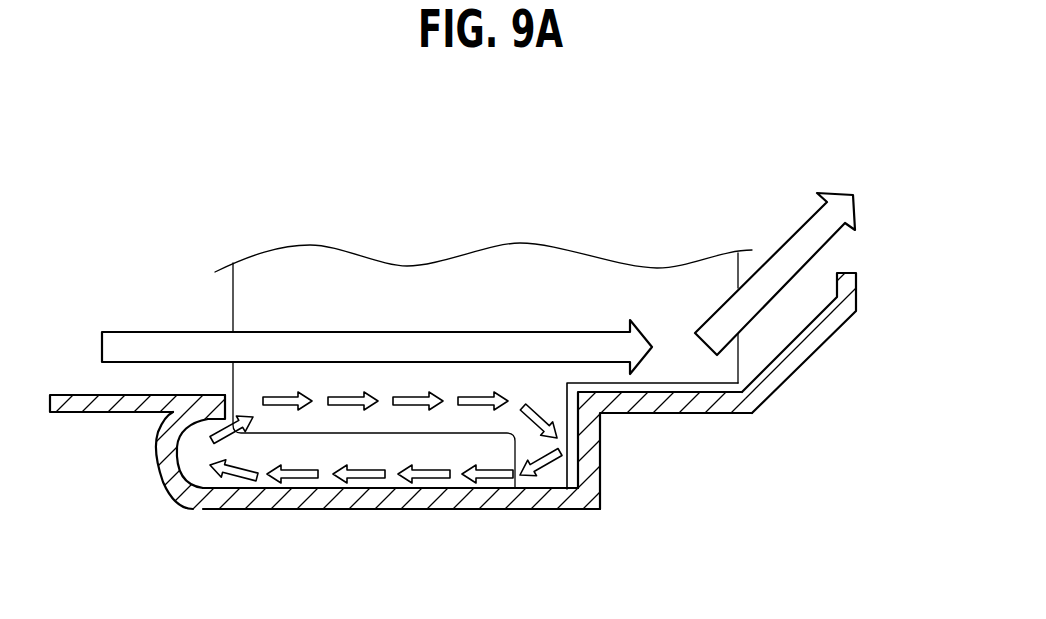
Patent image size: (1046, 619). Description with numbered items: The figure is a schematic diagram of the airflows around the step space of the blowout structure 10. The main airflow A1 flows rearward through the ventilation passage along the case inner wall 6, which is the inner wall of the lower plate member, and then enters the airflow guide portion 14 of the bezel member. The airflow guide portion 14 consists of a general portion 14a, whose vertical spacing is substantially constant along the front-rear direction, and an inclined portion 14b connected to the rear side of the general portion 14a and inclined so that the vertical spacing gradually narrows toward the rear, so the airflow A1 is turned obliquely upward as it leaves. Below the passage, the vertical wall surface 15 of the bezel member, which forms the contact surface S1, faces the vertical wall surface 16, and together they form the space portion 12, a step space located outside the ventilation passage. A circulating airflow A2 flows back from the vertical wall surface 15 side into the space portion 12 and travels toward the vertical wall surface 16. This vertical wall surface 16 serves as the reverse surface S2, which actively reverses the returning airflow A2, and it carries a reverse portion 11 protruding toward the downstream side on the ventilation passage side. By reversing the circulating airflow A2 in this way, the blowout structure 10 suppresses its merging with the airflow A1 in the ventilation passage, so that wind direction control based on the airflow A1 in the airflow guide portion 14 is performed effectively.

The blowout structure 10 is at (607, 160).
The case inner wall 6 is at (70, 399).
The reverse portion 11 is at (213, 405).
The vertical wall surface 16 is at (175, 482).
The space portion 12 is at (457, 455).
The vertical wall surface 15 is at (579, 475).
The airflow guide portion 14 is at (733, 412).
The general portion 14a is at (674, 392).
The inclined portion 14b is at (773, 362).
The airflow A1 is at (433, 342).
The circulating airflow A2 is at (410, 400).